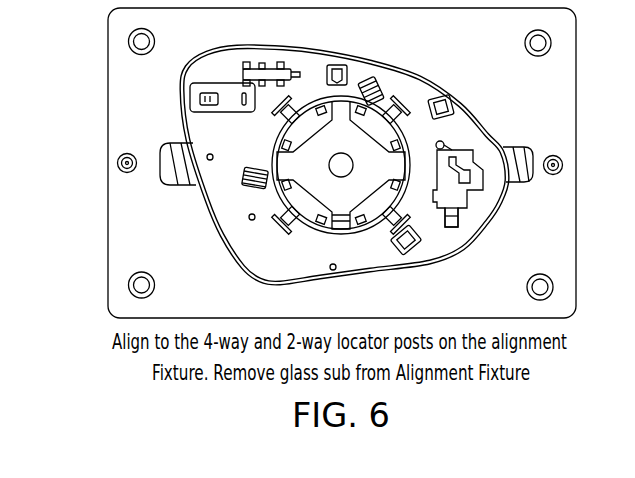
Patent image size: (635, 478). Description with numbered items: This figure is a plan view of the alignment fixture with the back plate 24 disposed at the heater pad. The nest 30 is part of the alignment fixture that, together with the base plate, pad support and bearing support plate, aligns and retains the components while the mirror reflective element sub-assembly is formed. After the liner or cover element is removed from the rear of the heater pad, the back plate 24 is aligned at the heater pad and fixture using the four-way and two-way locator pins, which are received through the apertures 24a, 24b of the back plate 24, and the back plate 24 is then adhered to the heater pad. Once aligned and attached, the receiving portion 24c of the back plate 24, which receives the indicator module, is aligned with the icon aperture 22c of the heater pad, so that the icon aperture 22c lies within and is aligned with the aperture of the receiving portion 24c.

The nest 30 is at (112, 124).
The back plate 24 is at (243, 73).
The aperture of the back plate 24a is at (468, 146).
The receiving portion 24c is at (484, 156).
The icon aperture 22c is at (473, 171).
The aperture of the back plate 24b is at (474, 198).